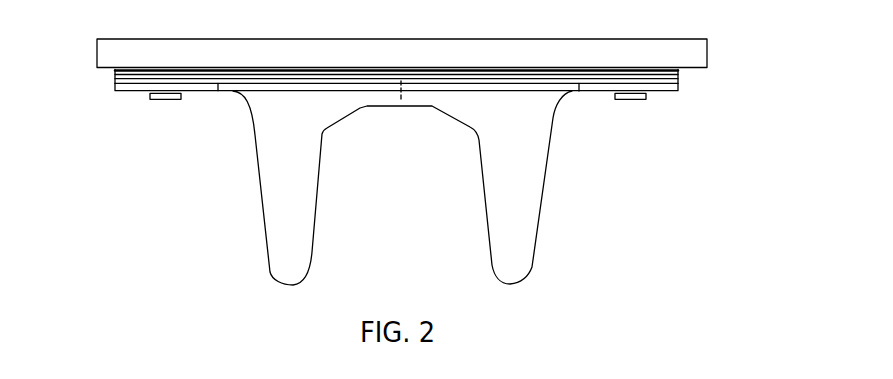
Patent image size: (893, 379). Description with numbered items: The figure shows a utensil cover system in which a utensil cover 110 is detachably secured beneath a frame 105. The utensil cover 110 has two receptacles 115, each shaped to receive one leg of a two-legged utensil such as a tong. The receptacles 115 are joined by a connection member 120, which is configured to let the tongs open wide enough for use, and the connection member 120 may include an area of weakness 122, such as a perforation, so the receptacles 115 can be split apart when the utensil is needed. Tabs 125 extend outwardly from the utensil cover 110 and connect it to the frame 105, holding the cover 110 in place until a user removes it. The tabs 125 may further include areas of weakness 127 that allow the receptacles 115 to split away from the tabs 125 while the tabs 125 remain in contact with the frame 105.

The frame 105 is at (707, 53).
The utensil cover 110 is at (678, 72).
The receptacle 115 is at (263, 220).
The connection member 120 is at (378, 115).
The area of weakness 122 is at (160, 100).
The tabs 125 is at (115, 91).
The areas of weakness 127 is at (579, 91).